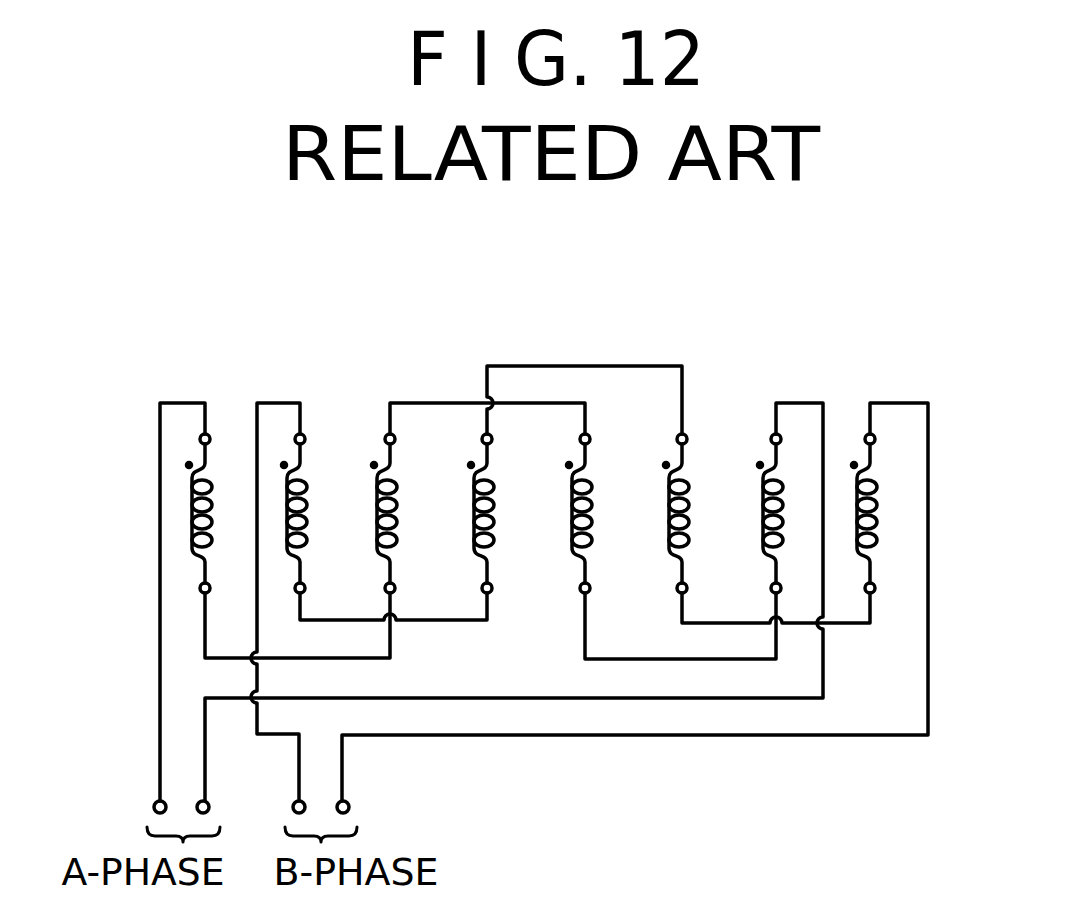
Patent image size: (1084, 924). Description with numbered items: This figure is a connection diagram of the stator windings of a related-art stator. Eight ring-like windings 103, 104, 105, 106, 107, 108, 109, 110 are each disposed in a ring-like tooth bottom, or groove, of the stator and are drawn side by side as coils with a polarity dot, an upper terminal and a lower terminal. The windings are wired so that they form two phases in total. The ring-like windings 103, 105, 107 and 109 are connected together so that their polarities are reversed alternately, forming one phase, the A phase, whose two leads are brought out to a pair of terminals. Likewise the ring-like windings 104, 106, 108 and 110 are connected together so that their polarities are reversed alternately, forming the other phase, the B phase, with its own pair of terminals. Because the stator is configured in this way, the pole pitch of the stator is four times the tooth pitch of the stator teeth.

The ring-like winding 103 is at (190, 497).
The ring-like winding 104 is at (286, 497).
The ring-like winding 105 is at (375, 497).
The ring-like winding 106 is at (470, 497).
The ring-like winding 107 is at (570, 497).
The ring-like winding 108 is at (667, 497).
The ring-like winding 109 is at (762, 497).
The ring-like winding 110 is at (857, 497).